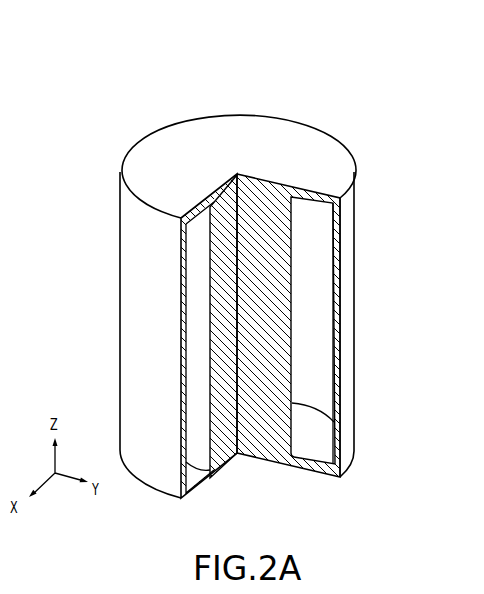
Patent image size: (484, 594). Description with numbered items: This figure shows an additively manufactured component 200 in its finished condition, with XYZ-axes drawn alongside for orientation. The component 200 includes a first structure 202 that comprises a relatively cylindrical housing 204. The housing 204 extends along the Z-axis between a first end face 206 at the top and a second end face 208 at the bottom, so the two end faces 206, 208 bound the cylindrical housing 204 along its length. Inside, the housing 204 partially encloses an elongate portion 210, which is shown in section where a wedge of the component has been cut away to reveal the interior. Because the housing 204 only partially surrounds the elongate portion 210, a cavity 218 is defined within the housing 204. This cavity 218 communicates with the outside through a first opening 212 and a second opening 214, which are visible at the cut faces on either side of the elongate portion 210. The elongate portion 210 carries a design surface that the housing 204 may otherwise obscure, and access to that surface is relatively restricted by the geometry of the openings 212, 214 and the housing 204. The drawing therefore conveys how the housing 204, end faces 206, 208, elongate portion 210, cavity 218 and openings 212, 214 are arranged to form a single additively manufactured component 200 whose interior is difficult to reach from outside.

The additively manufactured component 200 is at (242, 281).
The first structure 202 is at (260, 324).
The cylindrical housing 204 is at (347, 297).
The first end face 206 is at (130, 175).
The second end face 208 is at (148, 489).
The elongate portion 210 is at (271, 313).
The first opening 212 is at (338, 385).
The second opening 214 is at (200, 385).
The cavity 218 is at (312, 350).